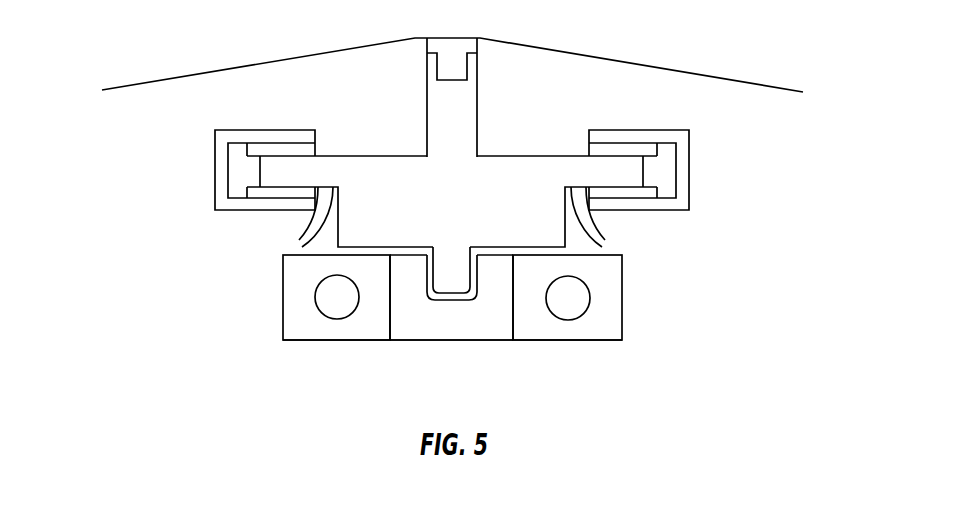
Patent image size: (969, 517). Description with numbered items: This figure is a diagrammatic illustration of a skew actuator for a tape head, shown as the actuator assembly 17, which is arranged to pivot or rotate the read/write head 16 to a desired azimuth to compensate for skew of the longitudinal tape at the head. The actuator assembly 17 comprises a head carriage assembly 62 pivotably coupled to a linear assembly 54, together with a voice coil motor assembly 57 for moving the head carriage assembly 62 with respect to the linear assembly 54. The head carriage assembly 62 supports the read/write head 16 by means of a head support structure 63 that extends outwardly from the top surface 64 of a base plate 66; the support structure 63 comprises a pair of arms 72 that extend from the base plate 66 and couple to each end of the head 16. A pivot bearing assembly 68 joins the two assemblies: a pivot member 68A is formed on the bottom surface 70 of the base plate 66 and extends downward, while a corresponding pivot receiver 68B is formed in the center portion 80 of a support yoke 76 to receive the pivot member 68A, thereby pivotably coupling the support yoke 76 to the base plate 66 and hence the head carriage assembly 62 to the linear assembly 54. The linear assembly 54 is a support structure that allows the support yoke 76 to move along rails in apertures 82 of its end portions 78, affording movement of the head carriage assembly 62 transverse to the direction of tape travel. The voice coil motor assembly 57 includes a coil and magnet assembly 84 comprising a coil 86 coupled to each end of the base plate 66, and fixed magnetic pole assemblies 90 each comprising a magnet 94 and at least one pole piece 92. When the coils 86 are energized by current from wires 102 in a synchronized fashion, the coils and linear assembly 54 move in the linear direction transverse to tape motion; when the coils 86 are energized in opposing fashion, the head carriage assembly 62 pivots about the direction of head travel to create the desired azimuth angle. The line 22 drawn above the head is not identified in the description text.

The roof 22 is at (297, 56).
The read/write head 16 is at (473, 45).
The head support structure 63 is at (427, 108).
The arms 72 is at (463, 105).
The top surface 64 is at (370, 155).
The head carriage assembly 62 is at (529, 142).
The base plate 66 is at (466, 192).
The bottom surface 70 is at (400, 248).
The coil and magnet assembly 84 is at (235, 128).
The magnetic pole assemblies 90 is at (260, 124).
The pole piece 92 is at (233, 210).
The wires 102 is at (300, 244).
The magnet 94 is at (622, 148).
The coil 86 is at (643, 170).
The voice coil motor assembly 57 is at (699, 139).
The actuator assembly 17 is at (248, 258).
The support yoke 76 is at (475, 378).
The end portions 78 is at (295, 340).
The apertures 82 is at (335, 320).
The pivot bearing assembly 68 is at (423, 271).
The pivot member 68A is at (452, 289).
The pivot receiver 68B is at (483, 271).
The center portion 80 is at (465, 341).
The linear assembly 54 is at (655, 335).